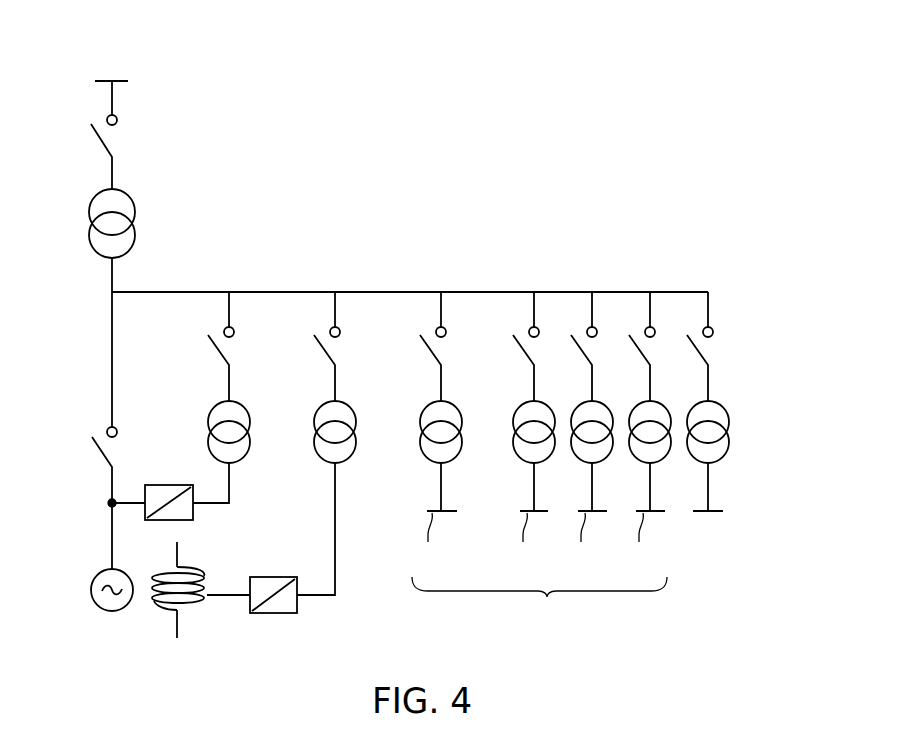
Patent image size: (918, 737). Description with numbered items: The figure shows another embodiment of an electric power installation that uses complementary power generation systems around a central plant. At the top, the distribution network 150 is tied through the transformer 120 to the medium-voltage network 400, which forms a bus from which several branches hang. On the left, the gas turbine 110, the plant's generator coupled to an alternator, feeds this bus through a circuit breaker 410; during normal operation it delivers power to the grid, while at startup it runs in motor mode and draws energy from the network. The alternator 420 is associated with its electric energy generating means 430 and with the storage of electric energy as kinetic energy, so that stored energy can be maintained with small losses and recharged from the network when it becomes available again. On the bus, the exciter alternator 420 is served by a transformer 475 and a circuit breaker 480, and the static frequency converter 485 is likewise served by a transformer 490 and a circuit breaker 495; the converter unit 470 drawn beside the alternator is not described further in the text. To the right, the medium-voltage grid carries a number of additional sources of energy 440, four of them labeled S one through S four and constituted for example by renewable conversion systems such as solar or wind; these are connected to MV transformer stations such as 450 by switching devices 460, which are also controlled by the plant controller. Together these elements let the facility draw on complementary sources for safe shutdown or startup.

The gas turbine 110 is at (90, 591).
The transformer 120 is at (137, 207).
The distribution network 150 is at (118, 80).
The MV medium-voltage network 400 is at (404, 162).
The circuit breaker 410 is at (100, 457).
The alternator 420 is at (178, 630).
The electric energy generating means 430 is at (730, 413).
The additional sources of energy 440 is at (539, 547).
The MV transformer station 450 is at (462, 418).
The circuit breaker 460 is at (427, 352).
The power converter 470 is at (266, 577).
The transformer 475 is at (355, 418).
The circuit breaker 480 is at (321, 352).
The static frequency converter 485 is at (162, 484).
The transformer 490 is at (250, 418).
The circuit breaker 495 is at (216, 352).